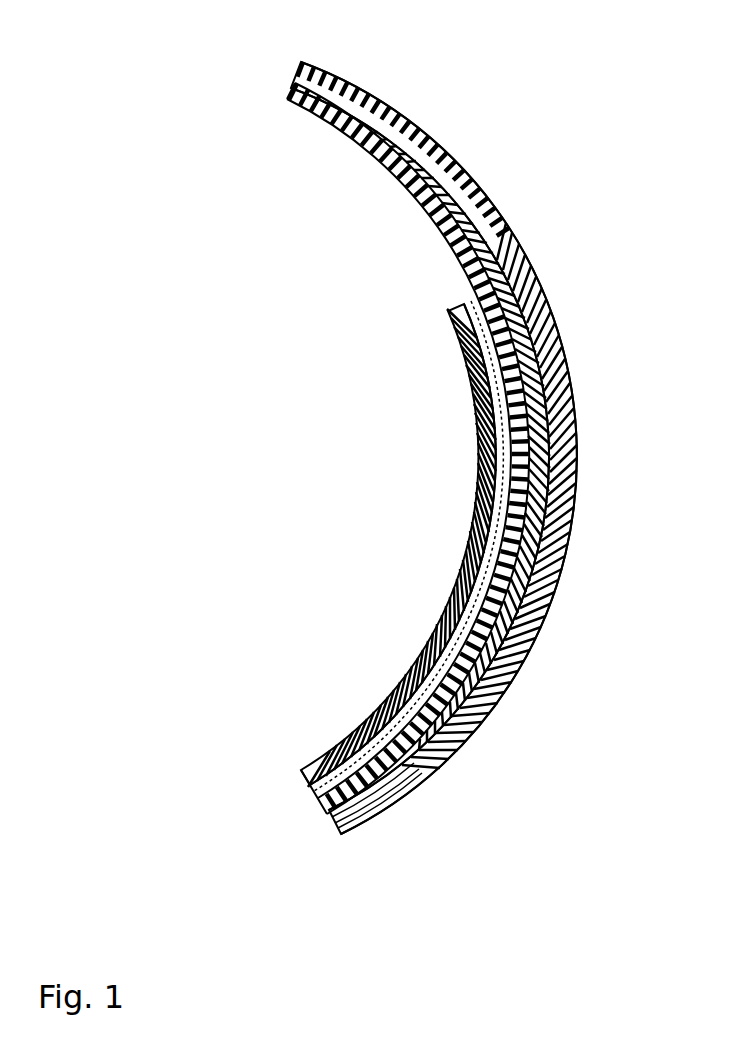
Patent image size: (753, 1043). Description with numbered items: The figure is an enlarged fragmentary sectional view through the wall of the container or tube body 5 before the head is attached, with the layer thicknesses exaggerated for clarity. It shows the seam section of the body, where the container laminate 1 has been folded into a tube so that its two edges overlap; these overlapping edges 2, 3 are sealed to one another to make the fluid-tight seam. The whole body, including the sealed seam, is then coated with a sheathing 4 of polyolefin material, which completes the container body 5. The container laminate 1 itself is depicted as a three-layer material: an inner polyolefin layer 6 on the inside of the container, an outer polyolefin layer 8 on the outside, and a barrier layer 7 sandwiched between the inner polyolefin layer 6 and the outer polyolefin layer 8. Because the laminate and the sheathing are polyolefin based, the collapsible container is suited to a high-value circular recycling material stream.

The container laminate 1 is at (560, 557).
The overlapping edge 2 is at (447, 308).
The overlapping edge 3 is at (545, 398).
The sheathing 4 is at (578, 478).
The container body 5 is at (412, 128).
The inner polyolefin layer 6 is at (553, 297).
The barrier layer 7 is at (368, 90).
The outer polyolefin layer 8 is at (507, 222).